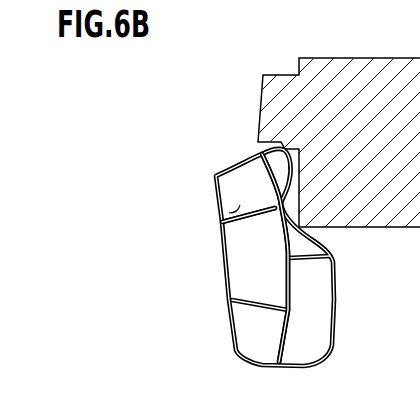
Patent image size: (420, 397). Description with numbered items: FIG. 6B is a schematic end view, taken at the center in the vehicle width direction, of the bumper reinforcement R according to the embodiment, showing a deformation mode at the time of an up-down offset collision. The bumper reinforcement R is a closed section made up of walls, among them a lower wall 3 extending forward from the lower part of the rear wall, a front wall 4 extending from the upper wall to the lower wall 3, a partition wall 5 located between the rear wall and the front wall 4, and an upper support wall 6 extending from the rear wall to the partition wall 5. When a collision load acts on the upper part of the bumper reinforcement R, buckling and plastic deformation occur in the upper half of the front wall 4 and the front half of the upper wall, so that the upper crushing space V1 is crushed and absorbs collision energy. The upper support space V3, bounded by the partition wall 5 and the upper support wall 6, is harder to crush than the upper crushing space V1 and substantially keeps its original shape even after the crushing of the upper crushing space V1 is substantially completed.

The lower wall 3 is at (222, 164).
The front wall 4 is at (336, 237).
The partition wall 5 is at (284, 253).
The upper support wall 6 is at (220, 210).
The bumper reinforcement R is at (206, 173).
The upper crushing space V1 is at (257, 152).
The upper support space V3 is at (257, 198).